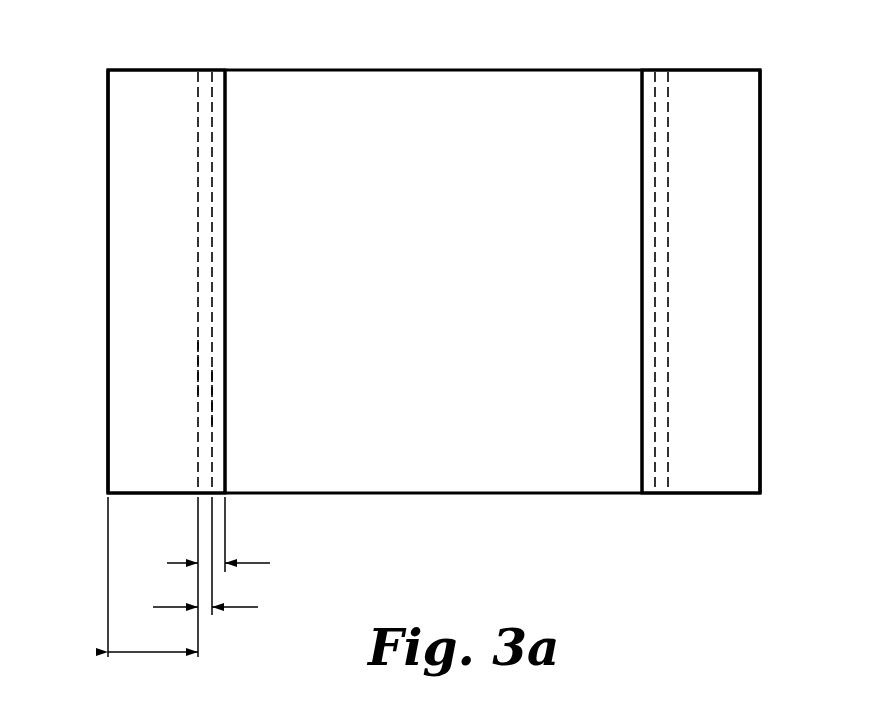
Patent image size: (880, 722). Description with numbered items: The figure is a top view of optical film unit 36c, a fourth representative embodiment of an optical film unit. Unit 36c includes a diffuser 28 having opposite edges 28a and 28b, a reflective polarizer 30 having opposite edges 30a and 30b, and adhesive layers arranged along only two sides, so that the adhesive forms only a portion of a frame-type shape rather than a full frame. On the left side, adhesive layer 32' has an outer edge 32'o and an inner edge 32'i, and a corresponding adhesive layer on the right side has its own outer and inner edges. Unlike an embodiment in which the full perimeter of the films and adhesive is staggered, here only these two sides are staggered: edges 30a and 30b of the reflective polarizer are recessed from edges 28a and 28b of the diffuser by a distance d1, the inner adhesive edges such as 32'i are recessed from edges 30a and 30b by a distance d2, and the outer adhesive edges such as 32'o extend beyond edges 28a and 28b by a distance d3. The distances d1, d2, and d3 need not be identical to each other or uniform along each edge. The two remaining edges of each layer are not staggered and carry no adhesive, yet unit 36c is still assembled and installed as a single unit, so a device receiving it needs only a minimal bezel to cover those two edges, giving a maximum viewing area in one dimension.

The optical film unit 36c is at (752, 50).
The adhesive layer 32' is at (134, 281).
The outer edge of adhesive layer 32'o is at (63, 281).
The inner edge of adhesive layer 32'i is at (263, 281).
The diffuser 28 is at (200, 277).
The reflective polarizer 30 is at (214, 318).
The edge of diffuser 28a is at (198, 370).
The edge of reflective polarizer 30a is at (212, 402).
The edge of diffuser 28b is at (668, 237).
The edge of reflective polarizer 30b is at (655, 331).
The recessed distance d1 is at (243, 609).
The recessed distance d2 is at (262, 566).
The recessed distance d3 is at (152, 655).